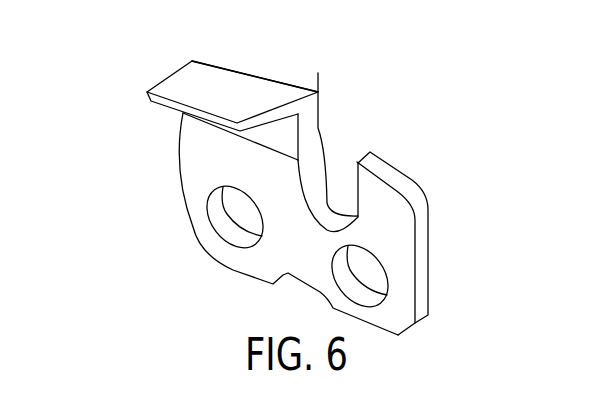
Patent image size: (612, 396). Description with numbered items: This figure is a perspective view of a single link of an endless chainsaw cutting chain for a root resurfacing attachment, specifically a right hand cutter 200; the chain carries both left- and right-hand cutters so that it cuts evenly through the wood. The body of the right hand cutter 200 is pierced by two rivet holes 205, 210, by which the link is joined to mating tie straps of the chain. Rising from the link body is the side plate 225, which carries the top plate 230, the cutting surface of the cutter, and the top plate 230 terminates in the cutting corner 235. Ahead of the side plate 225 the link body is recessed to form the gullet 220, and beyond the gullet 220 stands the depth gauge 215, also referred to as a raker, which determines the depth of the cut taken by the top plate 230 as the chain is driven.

The right hand cutter 200 is at (195, 240).
The rivet hole 205 is at (230, 213).
The rivet hole 210 is at (372, 283).
The depth gauge 215 is at (407, 222).
The gullet 220 is at (343, 192).
The side plate 225 is at (320, 127).
The top plate 230 is at (192, 98).
The cutting corner 235 is at (318, 75).